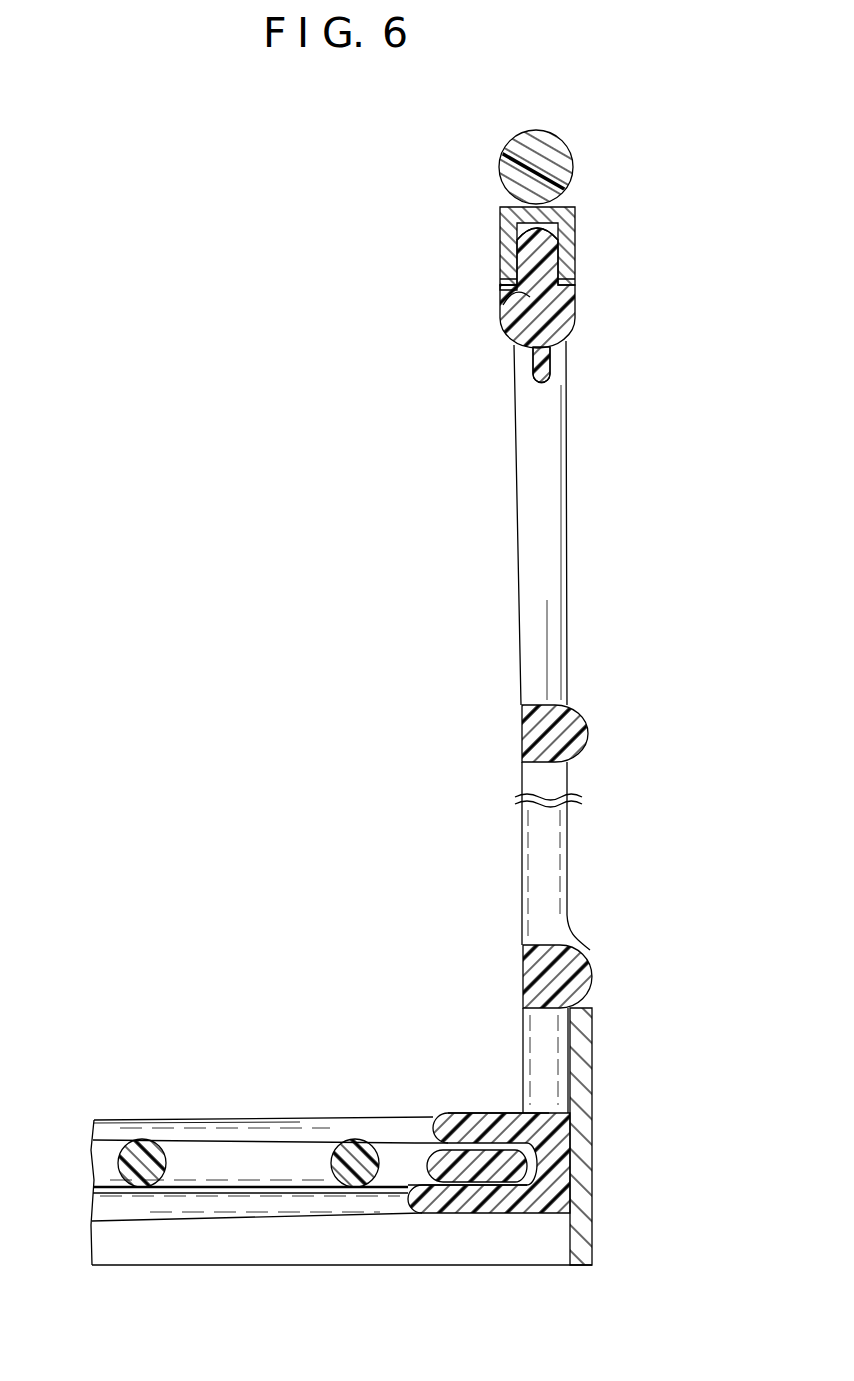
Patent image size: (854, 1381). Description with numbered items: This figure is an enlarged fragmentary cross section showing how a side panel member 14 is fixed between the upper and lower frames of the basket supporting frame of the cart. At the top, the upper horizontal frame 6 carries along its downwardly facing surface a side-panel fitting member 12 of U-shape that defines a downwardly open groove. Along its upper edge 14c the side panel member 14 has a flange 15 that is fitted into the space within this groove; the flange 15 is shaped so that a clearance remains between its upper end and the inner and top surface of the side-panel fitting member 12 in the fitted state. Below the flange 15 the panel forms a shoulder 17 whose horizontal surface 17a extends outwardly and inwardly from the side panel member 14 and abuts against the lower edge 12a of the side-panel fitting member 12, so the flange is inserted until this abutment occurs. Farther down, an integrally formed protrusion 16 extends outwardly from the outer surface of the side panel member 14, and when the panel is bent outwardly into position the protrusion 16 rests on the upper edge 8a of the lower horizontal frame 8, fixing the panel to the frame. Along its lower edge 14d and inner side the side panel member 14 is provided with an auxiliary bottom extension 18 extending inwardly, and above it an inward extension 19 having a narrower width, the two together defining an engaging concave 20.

The upper horizontal frame 6 is at (574, 160).
The side-panel fitting member 12 is at (577, 234).
The lower edge of the side-panel fitting member 12a is at (502, 302).
The side panel member 14 is at (568, 361).
The upper edge of the side panel member 14c is at (518, 338).
The lower edge of the side panel member 14d is at (556, 1128).
The flange 15 is at (532, 250).
The protrusion 16 is at (582, 962).
The shoulder 17 is at (578, 296).
The horizontal surface 17a is at (533, 312).
The lower horizontal frame 8 is at (586, 1166).
The upper edge of the lower horizontal frame 8a is at (592, 981).
The auxiliary bottom extension 18 is at (428, 1202).
The inward extension 19 is at (450, 1125).
The engaging concave 20 is at (518, 1213).